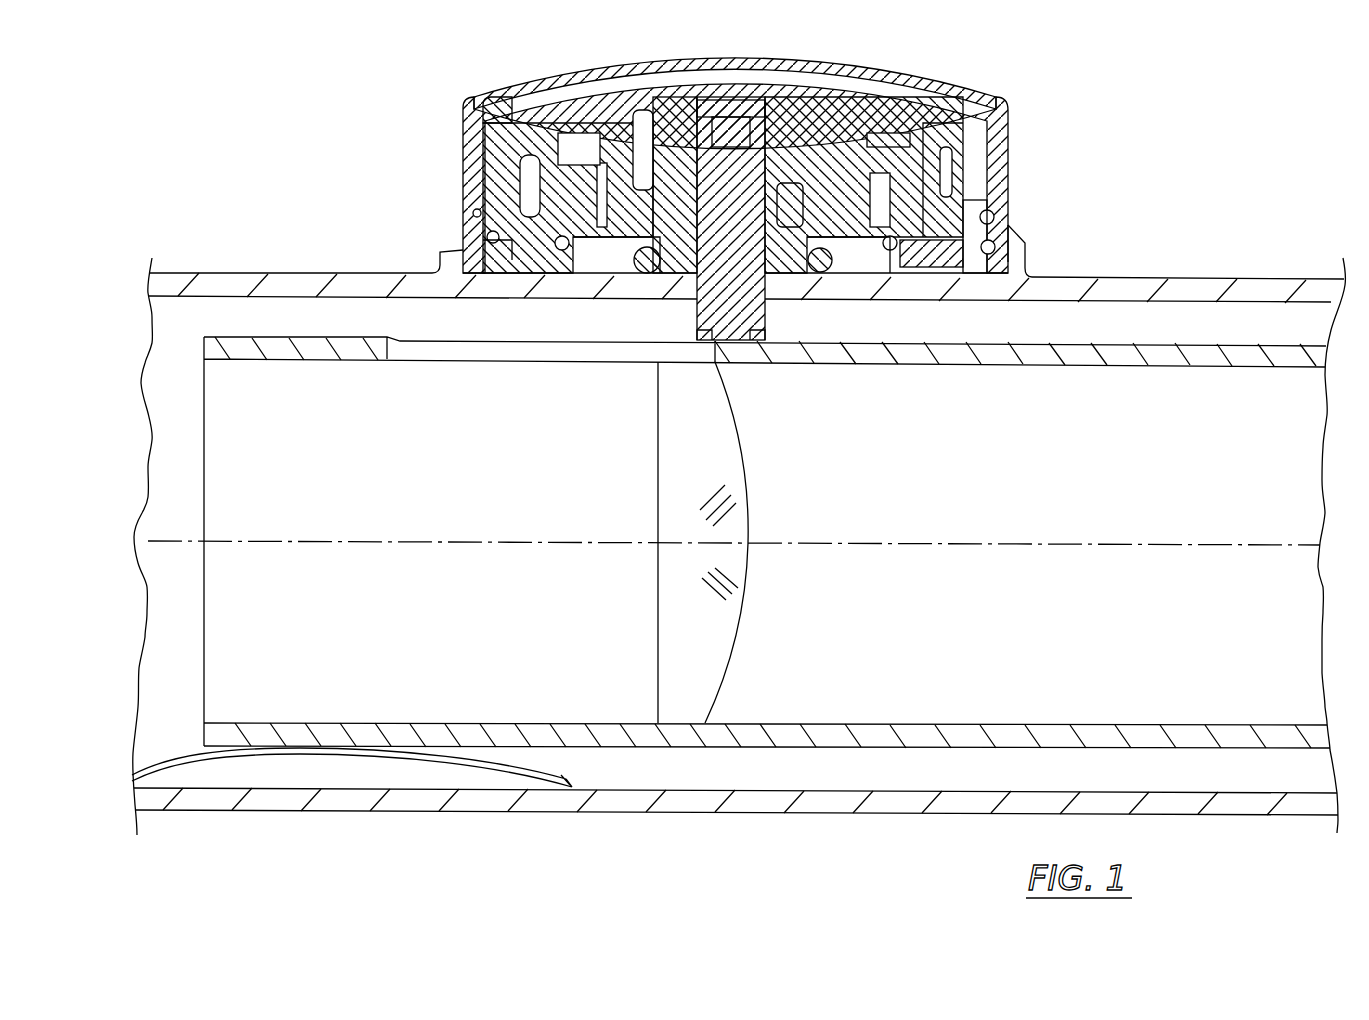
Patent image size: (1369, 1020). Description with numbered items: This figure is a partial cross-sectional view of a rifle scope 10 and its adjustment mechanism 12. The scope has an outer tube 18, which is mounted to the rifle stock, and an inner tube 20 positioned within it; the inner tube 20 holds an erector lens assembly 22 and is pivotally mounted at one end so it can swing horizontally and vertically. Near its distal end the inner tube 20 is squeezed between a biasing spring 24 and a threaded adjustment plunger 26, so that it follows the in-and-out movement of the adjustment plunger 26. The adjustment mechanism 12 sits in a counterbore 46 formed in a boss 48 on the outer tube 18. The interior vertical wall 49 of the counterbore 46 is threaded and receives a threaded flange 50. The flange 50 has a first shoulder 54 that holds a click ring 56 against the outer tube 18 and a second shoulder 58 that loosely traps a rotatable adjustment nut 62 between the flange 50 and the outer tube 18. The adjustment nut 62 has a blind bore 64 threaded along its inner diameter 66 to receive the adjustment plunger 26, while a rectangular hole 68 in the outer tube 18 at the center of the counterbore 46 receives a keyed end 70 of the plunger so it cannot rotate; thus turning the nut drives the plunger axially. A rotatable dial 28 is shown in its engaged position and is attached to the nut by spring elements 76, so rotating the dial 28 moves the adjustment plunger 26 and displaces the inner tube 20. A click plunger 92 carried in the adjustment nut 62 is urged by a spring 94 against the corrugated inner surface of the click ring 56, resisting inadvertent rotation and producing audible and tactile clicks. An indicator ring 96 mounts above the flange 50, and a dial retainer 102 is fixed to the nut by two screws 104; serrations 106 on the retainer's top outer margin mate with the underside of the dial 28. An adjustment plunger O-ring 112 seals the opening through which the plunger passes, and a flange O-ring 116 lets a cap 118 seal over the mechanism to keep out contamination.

The rifle scope 10 is at (236, 107).
The adjustment mechanism 12 is at (400, 122).
The outer tube 18 is at (232, 274).
The inner tube 20 is at (1118, 278).
The erector lens assembly 22 is at (745, 610).
The biasing spring 24 is at (223, 755).
The adjustment plunger 26 is at (737, 153).
The dial 28 is at (625, 95).
The counterbore 46 is at (585, 262).
The boss 48 is at (1030, 258).
The interior vertical wall 49 is at (473, 235).
The flange 50 is at (965, 198).
The first shoulder 54 is at (478, 230).
The click ring 56 is at (990, 251).
The second shoulder 58 is at (503, 178).
The adjustment nut 62 is at (820, 152).
The blind bore 64 is at (793, 123).
The inner diameter 66 is at (745, 130).
The rectangular hole 68 is at (700, 298).
The keyed end 70 is at (767, 308).
The spring elements 76 is at (843, 113).
The click plunger 92 is at (985, 224).
The spring 94 is at (975, 165).
The indicator ring 96 is at (503, 177).
The dial retainer 102 is at (918, 168).
The screws 104 is at (548, 150).
The serrations 106 is at (968, 140).
The adjustment plunger O-ring 112 is at (695, 118).
The flange O-ring 116 is at (473, 195).
The cap 118 is at (653, 63).